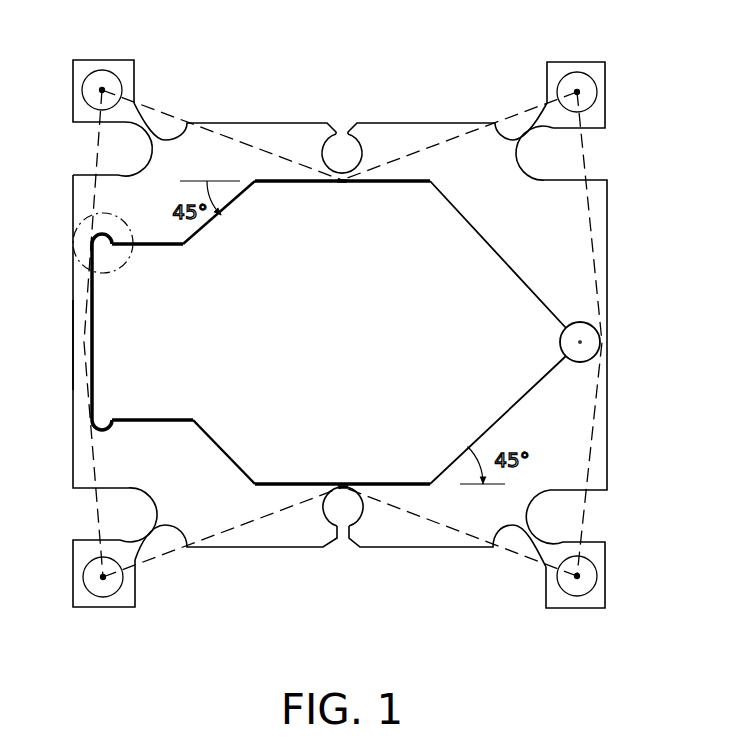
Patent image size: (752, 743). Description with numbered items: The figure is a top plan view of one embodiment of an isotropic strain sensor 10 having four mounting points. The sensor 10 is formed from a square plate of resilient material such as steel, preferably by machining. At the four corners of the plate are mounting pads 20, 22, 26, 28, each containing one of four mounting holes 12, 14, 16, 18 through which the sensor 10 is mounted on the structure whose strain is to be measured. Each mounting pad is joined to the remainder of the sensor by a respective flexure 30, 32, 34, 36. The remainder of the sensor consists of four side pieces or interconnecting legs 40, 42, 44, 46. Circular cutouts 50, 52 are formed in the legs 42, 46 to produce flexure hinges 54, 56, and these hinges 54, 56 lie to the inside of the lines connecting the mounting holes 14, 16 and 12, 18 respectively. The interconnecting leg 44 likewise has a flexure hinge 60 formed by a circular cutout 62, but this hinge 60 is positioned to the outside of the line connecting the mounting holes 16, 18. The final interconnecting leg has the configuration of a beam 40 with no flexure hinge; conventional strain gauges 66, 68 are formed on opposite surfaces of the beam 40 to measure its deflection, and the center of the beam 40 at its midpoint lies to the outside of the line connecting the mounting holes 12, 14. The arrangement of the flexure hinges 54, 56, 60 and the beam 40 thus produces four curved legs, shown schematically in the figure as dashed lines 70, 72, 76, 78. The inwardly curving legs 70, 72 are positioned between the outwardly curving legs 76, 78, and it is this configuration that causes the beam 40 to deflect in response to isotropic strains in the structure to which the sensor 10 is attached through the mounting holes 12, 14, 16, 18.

The strain sensor 10 is at (208, 59).
The mounting hole 12 is at (99, 78).
The mounting hole 14 is at (103, 593).
The mounting hole 16 is at (585, 594).
The mounting hole 18 is at (578, 83).
The mounting pad 20 is at (131, 70).
The mounting pad 22 is at (130, 595).
The mounting pad 26 is at (551, 597).
The mounting pad 28 is at (601, 108).
The flexure 30 is at (143, 133).
The flexure 32 is at (144, 527).
The flexure 34 is at (538, 532).
The flexure 36 is at (535, 134).
The beam 40 is at (72, 451).
The interconnecting leg 42 is at (303, 538).
The interconnecting leg 44 is at (607, 437).
The interconnecting leg 46 is at (400, 129).
The circular cutout 50 is at (352, 517).
The circular cutout 52 is at (336, 151).
The flexure hinge 54 is at (343, 486).
The flexure hinge 56 is at (343, 185).
The flexure hinge 60 is at (601, 340).
The circular cutout 62 is at (577, 342).
The strain gauge 66 is at (73, 339).
The strain gauge 68 is at (93, 338).
The curved leg 70 is at (236, 530).
The curved leg 72 is at (243, 141).
The curved leg 76 is at (598, 385).
The curved leg 78 is at (88, 384).